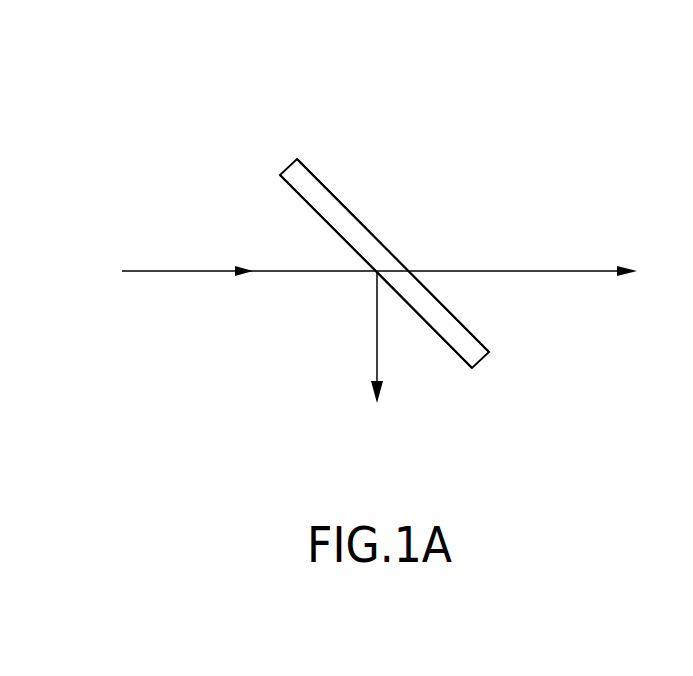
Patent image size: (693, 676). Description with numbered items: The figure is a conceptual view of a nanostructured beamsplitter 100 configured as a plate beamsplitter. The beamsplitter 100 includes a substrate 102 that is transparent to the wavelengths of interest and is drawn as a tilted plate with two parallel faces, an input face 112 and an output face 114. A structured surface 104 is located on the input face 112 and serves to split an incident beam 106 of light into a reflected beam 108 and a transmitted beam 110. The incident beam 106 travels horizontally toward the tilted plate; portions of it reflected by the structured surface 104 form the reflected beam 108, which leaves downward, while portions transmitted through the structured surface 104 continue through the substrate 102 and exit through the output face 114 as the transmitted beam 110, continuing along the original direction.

The nanostructured beamsplitter 100 is at (244, 104).
The substrate 102 is at (481, 361).
The structured surface 104 is at (426, 322).
The incident beam 106 is at (212, 271).
The reflected beam 108 is at (377, 328).
The transmitted beam 110 is at (518, 271).
The input face 112 is at (304, 200).
The output face 114 is at (352, 213).